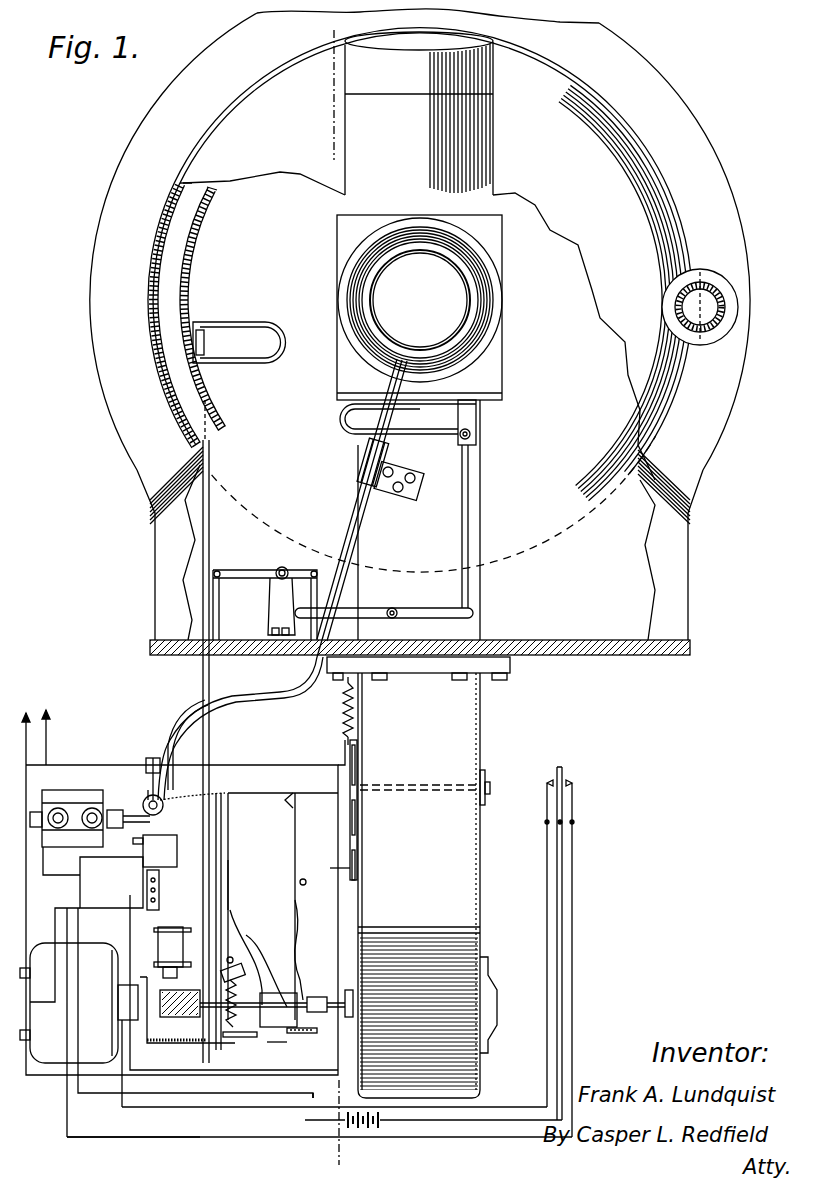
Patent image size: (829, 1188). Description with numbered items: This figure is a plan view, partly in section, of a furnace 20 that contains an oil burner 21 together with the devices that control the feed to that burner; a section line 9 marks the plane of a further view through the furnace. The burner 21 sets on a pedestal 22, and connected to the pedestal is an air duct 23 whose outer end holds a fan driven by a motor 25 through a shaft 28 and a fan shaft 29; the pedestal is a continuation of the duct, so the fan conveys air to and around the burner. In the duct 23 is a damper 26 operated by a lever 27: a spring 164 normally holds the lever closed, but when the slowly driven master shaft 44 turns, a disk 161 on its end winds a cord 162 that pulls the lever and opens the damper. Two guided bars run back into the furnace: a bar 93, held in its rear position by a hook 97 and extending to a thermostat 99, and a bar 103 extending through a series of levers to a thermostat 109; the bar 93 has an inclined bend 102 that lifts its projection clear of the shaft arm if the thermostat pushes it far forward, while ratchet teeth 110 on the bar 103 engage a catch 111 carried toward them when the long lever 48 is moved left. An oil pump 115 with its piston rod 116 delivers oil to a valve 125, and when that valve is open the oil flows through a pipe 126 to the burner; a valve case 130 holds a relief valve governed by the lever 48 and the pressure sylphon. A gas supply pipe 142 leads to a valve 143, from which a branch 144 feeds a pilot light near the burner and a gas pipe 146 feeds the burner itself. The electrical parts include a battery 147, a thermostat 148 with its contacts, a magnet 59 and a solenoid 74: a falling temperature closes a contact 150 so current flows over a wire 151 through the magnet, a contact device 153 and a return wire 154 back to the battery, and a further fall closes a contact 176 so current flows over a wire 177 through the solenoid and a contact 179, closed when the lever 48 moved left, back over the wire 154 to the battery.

The section line 9 is at (338, 33).
The furnace 20 is at (420, 324).
The burner 21 is at (420, 300).
The pedestal 22 is at (493, 367).
The air duct 23 is at (420, 832).
The motor 25 is at (79, 1025).
The damper 26 is at (440, 790).
The lever 27 is at (357, 758).
The shaft 28 is at (172, 1020).
The fan shaft 29 is at (330, 981).
The master shaft 44 is at (312, 882).
The lever 48 is at (265, 950).
The magnet 59 is at (158, 945).
The solenoid 74 is at (143, 870).
The bar 93 is at (209, 530).
The hook 97 is at (190, 832).
The thermostat 99 is at (240, 363).
The incline 102 is at (268, 788).
The bar 103 is at (225, 722).
The thermostat 109 is at (435, 440).
The ratchet teeth 110 is at (228, 912).
The catch 111 is at (242, 945).
The oil pump 115 is at (85, 783).
The piston rod 116 is at (274, 812).
The valve 125 is at (138, 795).
The pipe 126 is at (338, 748).
The valve case 130 is at (317, 950).
The gas supply pipe 142 is at (140, 845).
The valve 143 is at (205, 795).
The branch 144 is at (186, 690).
The gas pipe 146 is at (360, 520).
The battery 147 is at (365, 1128).
The thermostat 148 is at (566, 748).
The contact 150 is at (547, 812).
The wire 151 is at (547, 1066).
The contact device 153 is at (317, 1040).
The wire 154 is at (300, 1086).
The disk 161 is at (357, 868).
The cord 162 is at (357, 820).
The spring 164 is at (343, 700).
The contact 176 is at (573, 804).
The wire 177 is at (212, 1152).
The contact 179 is at (290, 1058).